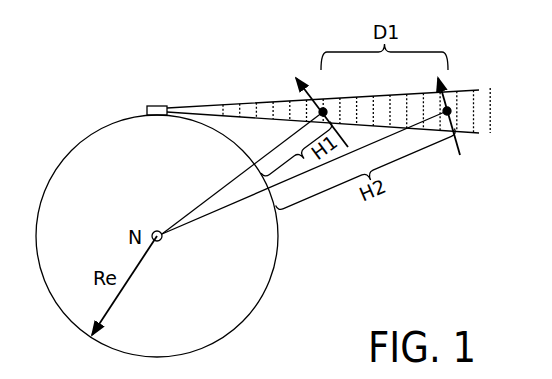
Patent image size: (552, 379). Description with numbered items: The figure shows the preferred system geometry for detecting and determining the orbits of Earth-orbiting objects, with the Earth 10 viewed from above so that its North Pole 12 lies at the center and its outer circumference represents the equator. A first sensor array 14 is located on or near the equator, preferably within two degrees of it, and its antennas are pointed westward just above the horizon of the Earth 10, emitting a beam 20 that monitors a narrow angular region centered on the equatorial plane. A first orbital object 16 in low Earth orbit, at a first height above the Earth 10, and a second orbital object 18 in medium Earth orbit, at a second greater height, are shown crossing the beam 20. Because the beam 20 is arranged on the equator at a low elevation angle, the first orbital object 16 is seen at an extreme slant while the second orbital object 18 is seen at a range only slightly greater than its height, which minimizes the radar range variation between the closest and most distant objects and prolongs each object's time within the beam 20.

The Earth 10 is at (78, 193).
The North Pole 12 is at (159, 242).
The first sensor array 14 is at (157, 104).
The first orbital object 16 is at (318, 116).
The second orbital object 18 is at (451, 111).
The beam 20 is at (240, 104).